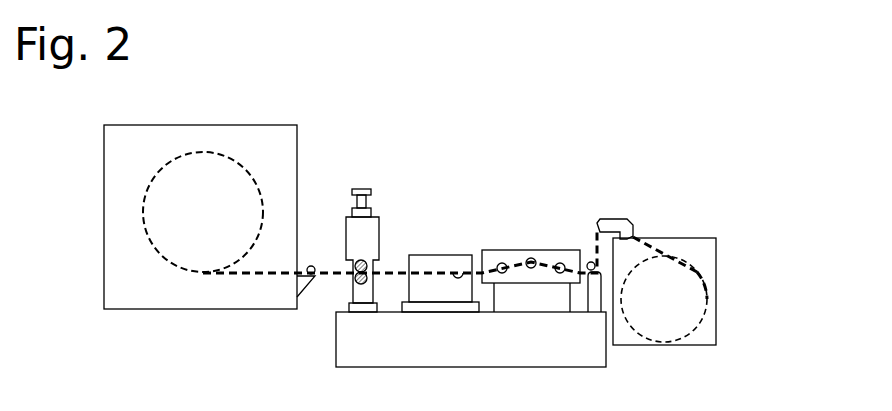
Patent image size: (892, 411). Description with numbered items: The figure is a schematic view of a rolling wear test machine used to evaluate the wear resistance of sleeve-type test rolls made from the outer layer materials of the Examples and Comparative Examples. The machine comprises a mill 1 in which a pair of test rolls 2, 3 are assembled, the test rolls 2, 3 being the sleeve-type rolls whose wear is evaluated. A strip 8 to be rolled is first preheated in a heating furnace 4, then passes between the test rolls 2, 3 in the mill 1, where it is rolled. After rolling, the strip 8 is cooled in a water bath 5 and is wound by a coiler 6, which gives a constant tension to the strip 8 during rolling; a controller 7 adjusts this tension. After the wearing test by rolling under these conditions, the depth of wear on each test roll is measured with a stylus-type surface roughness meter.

The mill 1 is at (346, 228).
The test roll 2 is at (366, 261).
The test roll 3 is at (367, 283).
The heating furnace 4 is at (272, 165).
The water bath 5 is at (437, 288).
The coiler 6 is at (683, 248).
The controller 7 is at (531, 252).
The strip 8 is at (247, 274).